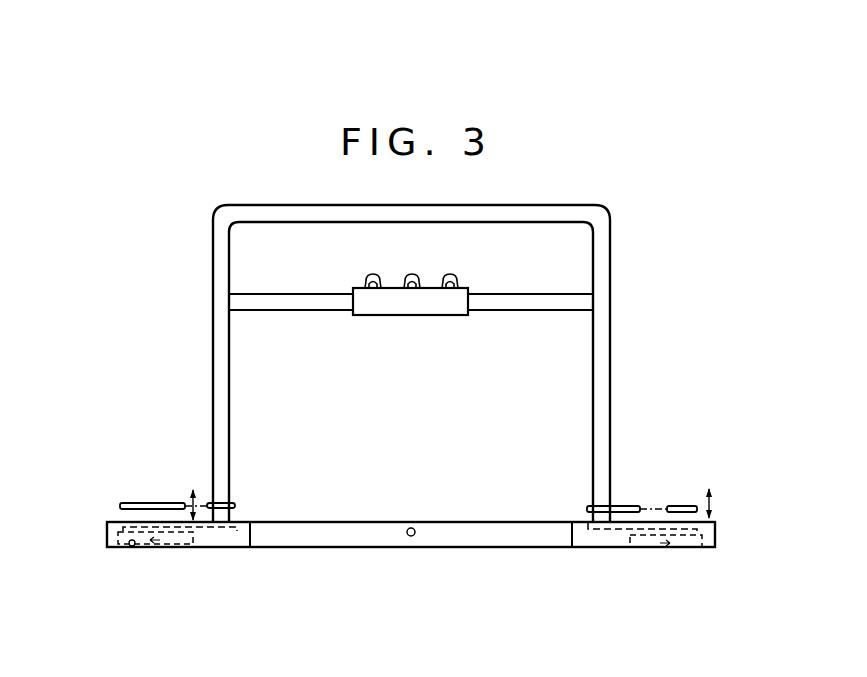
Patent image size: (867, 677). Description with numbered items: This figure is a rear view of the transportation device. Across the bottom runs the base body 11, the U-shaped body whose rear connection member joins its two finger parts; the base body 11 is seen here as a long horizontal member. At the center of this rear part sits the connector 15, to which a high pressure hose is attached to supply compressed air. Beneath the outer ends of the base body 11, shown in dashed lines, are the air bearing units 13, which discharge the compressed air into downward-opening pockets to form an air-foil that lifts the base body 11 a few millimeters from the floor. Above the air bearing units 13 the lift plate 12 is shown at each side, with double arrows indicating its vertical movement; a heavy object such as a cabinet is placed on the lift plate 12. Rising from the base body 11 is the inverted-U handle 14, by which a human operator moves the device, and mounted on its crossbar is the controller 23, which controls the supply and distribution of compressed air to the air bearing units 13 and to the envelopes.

The base body 11 is at (298, 521).
The lift plate 12 is at (122, 522).
The air bearing unit 13 is at (156, 549).
The handle 14 is at (600, 346).
The connector 15 is at (412, 528).
The controller 23 is at (369, 277).